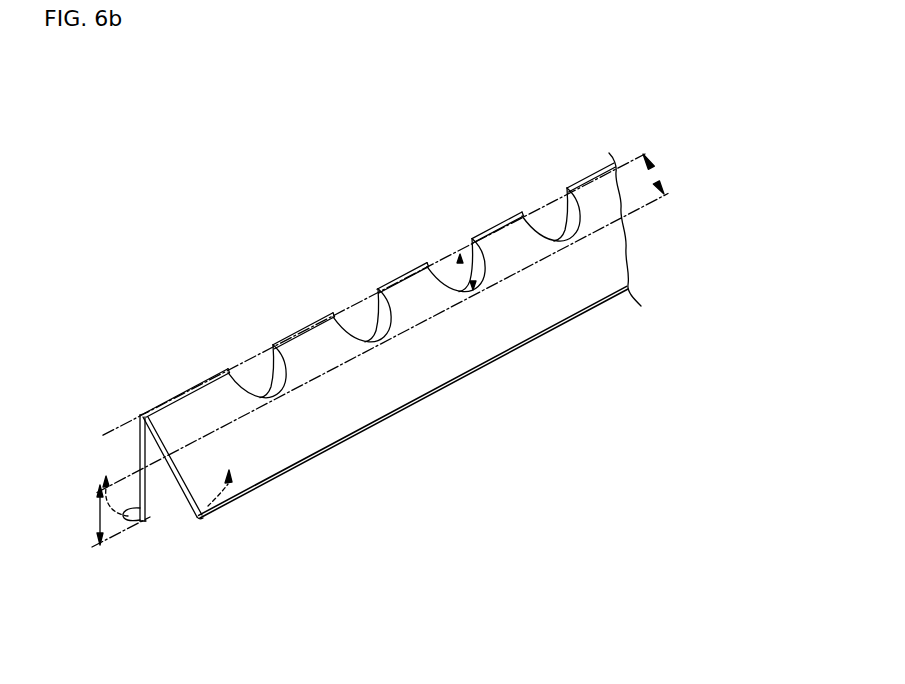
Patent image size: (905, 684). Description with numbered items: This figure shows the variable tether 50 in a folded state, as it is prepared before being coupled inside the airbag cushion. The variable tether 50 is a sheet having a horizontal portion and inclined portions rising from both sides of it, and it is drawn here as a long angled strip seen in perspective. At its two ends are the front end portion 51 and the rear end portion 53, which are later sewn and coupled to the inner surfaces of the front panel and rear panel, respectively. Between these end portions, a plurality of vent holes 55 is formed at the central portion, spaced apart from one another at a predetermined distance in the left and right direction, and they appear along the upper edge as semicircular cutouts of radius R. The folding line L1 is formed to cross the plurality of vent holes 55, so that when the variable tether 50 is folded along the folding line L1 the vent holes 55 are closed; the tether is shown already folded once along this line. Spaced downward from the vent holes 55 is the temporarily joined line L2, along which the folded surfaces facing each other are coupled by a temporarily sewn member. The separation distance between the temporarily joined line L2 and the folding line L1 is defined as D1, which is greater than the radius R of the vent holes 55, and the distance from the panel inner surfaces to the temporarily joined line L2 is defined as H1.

The variable tether 50 is at (437, 337).
The front end portion 51 is at (135, 522).
The rear end portion 53 is at (201, 520).
The vent holes 55 is at (370, 345).
The radius of the vent holes R is at (463, 265).
The folding line L1 is at (630, 162).
The temporarily joined line L2 is at (670, 195).
The separation distance D1 is at (662, 172).
The distance to the temporarily joined line H1 is at (106, 516).